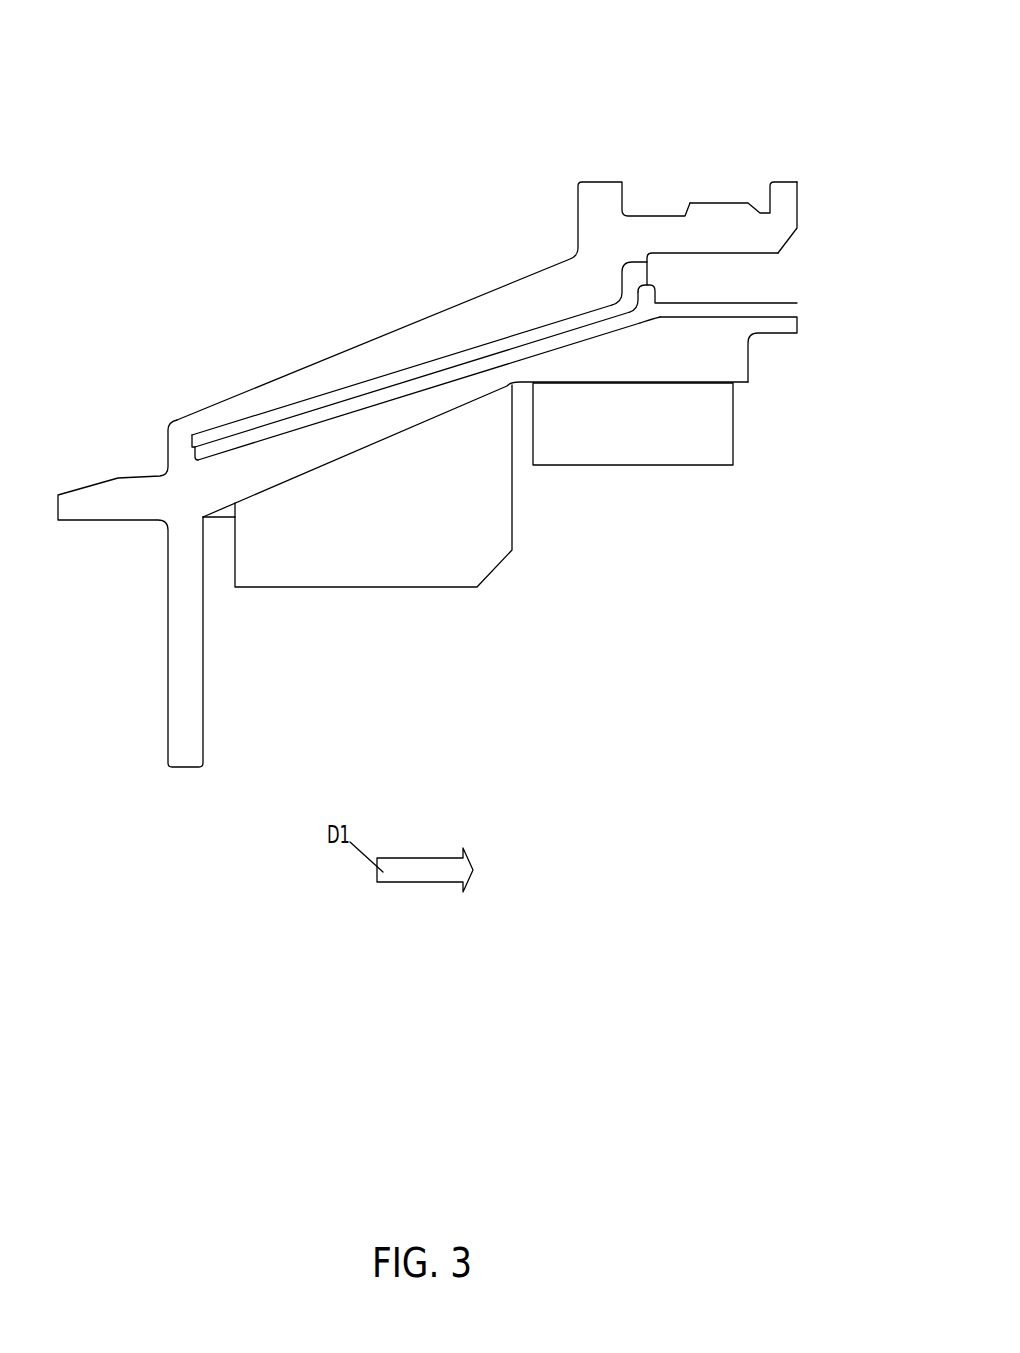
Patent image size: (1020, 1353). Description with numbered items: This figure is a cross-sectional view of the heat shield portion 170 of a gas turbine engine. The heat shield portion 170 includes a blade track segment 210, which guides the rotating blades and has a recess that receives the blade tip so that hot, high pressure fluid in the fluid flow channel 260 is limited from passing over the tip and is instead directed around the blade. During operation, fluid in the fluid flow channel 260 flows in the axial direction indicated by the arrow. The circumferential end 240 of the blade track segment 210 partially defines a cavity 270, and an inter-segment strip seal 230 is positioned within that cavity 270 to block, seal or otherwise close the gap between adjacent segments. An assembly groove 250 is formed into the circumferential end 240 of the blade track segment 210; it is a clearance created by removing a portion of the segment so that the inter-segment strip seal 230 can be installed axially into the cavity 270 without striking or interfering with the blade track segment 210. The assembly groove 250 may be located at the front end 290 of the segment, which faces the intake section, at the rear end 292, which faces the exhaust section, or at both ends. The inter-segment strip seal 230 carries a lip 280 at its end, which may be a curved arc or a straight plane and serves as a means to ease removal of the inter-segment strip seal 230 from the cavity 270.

The heat shield portion 170 is at (320, 286).
The blade track segment 210 is at (480, 320).
The inter-segment strip seal 230 is at (282, 420).
The circumferential end 240 is at (706, 210).
The assembly groove 250 is at (762, 247).
The fluid flow channel 260 is at (482, 667).
The cavity 270 is at (205, 433).
The lip 280 is at (643, 287).
The front end 290 is at (156, 435).
The rear end 292 is at (808, 195).